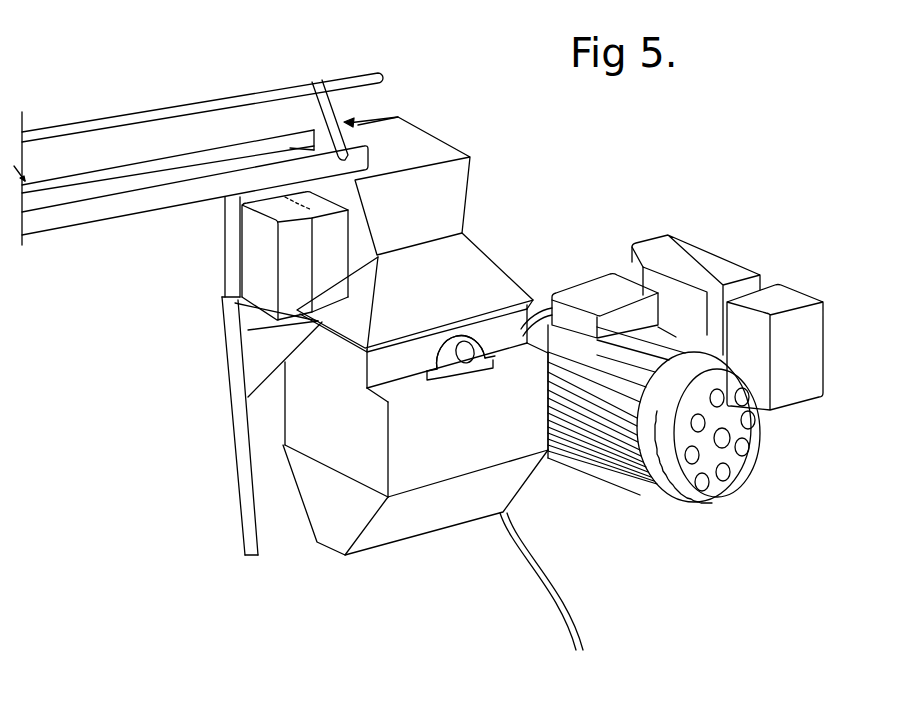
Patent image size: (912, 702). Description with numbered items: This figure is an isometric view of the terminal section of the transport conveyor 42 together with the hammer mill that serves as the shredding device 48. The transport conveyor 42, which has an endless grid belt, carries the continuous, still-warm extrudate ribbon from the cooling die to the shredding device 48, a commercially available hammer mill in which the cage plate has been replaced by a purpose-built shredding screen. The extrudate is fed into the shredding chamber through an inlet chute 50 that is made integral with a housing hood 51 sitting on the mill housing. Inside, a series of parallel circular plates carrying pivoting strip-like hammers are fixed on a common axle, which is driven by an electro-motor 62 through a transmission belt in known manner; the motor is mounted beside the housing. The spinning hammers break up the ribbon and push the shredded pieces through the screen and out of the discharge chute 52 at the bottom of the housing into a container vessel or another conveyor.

The transport conveyor 42 is at (153, 195).
The shredding device 48 is at (316, 557).
The inlet chute 50 is at (468, 200).
The housing hood 51 is at (488, 273).
The discharge chute 52 is at (523, 490).
The electro-motor 62 is at (737, 422).